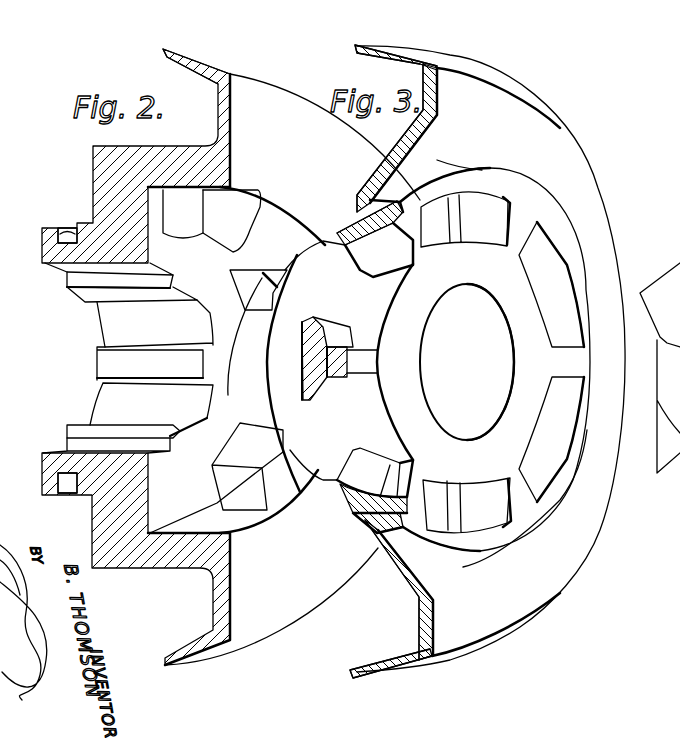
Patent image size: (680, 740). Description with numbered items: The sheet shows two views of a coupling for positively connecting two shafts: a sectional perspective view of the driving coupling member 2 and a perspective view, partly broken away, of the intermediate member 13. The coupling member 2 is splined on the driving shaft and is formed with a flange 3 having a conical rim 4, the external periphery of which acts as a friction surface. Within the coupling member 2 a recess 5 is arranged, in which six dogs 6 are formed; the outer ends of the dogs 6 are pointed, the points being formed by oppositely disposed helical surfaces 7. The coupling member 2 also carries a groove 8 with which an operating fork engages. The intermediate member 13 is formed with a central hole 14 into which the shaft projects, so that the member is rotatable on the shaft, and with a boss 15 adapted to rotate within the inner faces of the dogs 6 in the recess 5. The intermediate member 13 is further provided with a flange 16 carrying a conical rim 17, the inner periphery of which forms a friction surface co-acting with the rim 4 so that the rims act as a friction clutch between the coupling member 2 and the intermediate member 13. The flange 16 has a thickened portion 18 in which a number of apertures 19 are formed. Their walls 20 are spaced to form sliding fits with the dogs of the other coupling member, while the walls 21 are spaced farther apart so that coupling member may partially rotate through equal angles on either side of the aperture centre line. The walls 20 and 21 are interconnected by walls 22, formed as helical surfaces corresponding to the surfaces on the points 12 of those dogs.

In FIG. 2, the coupling member 2 is at (97, 530).
In FIG. 2, the flange 3 is at (220, 593).
In FIG. 2, the conical rim 4 is at (195, 70).
In FIG. 2, the recess 5 is at (293, 240).
In FIG. 2, the dogs 6 is at (210, 250).
In FIG. 2, the helical surfaces 7 is at (223, 210).
In FIG. 2, the groove 8 is at (62, 240).
In FIG. 3, the points 12 is at (660, 313).
In FIG. 3, the intermediate member 13 is at (597, 187).
In FIG. 3, the central hole 14 is at (483, 359).
In FIG. 3, the boss 15 is at (306, 366).
In FIG. 3, the flange 16 is at (440, 587).
In FIG. 3, the conical rim 17 is at (356, 50).
In FIG. 3, the thickened portion 18 is at (450, 188).
In FIG. 3, the apertures 19 is at (562, 430).
In FIG. 3, the walls 20 is at (343, 240).
In FIG. 3, the walls 21 is at (371, 353).
In FIG. 3, the walls 22 is at (375, 260).